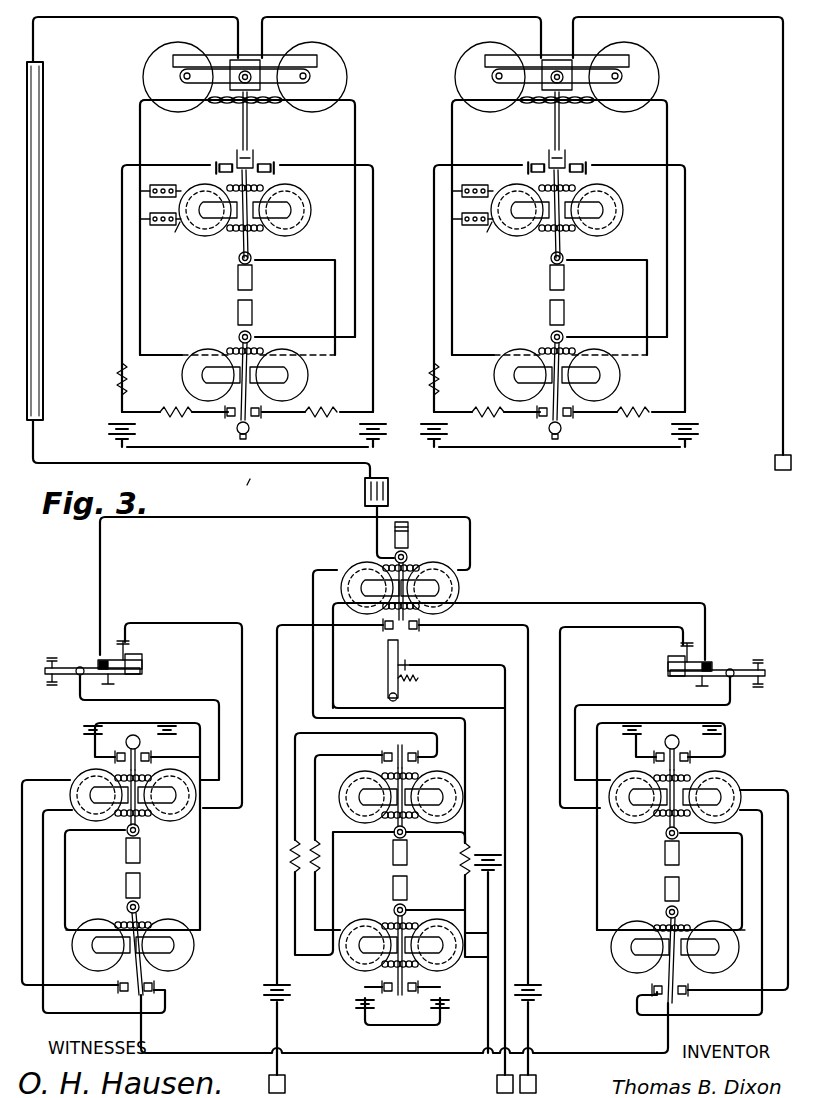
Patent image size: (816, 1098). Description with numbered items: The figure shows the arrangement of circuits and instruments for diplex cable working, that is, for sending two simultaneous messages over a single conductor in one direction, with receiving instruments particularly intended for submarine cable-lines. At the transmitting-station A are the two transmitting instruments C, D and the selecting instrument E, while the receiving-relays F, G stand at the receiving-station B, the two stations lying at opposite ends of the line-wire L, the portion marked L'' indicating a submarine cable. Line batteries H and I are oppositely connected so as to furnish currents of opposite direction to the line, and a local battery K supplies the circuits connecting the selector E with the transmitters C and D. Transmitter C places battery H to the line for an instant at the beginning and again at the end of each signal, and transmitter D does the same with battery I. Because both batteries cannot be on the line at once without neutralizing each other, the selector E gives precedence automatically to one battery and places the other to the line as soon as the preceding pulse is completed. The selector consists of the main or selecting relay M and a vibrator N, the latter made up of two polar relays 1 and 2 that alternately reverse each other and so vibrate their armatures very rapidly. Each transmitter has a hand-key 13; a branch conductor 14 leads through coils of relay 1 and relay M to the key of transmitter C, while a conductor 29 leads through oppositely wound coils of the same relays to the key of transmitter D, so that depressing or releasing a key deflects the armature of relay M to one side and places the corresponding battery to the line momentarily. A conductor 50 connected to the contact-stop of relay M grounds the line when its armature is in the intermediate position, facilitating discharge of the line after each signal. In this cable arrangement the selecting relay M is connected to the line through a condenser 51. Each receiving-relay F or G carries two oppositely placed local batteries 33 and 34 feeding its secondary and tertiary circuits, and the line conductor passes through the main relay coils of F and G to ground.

The polar relay 1 is at (399, 805).
The polar relay 2 is at (401, 937).
The hand-key 13 is at (405, 664).
The branch conductor 14 is at (285, 580).
The conductor 29 is at (519, 645).
The local battery 33 is at (109, 432).
The local battery 34 is at (385, 434).
The conductor 50 is at (402, 850).
The condenser 51 is at (392, 496).
The transmitting-station A is at (449, 1085).
The receiving-station B is at (372, 148).
The transmitting instrument C is at (111, 868).
The transmitting instrument D is at (692, 869).
The selecting instrument E is at (380, 660).
The receiving-relay F is at (247, 244).
The receiving-relay G is at (559, 244).
The line battery H is at (288, 1039).
The line battery I is at (535, 1039).
The local battery K is at (483, 943).
The line-wire L is at (255, 493).
The submarine cable L'' is at (52, 241).
The selecting relay M is at (389, 680).
The vibrator N is at (389, 879).